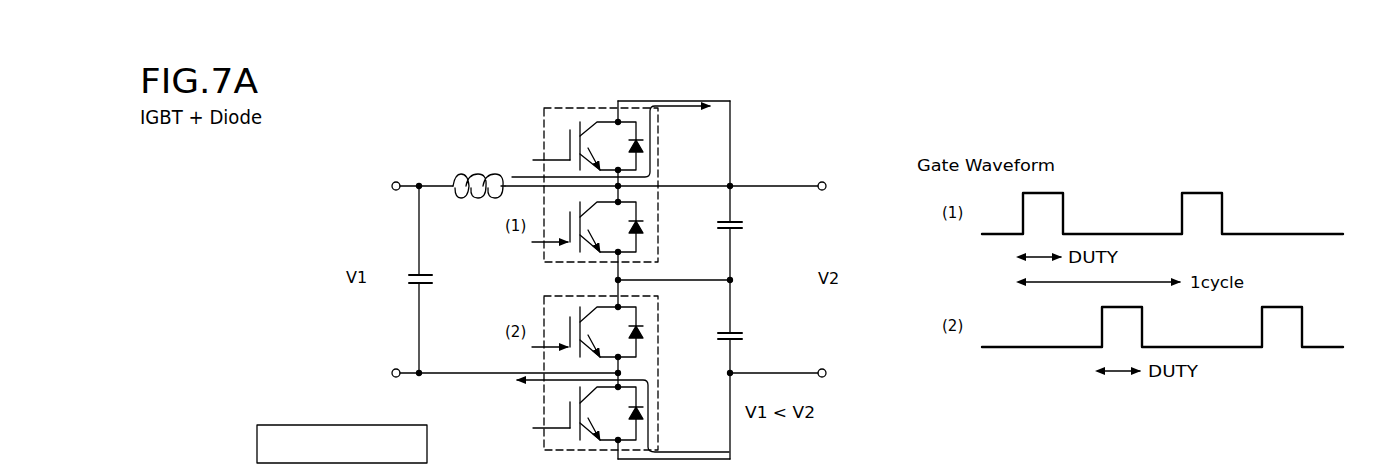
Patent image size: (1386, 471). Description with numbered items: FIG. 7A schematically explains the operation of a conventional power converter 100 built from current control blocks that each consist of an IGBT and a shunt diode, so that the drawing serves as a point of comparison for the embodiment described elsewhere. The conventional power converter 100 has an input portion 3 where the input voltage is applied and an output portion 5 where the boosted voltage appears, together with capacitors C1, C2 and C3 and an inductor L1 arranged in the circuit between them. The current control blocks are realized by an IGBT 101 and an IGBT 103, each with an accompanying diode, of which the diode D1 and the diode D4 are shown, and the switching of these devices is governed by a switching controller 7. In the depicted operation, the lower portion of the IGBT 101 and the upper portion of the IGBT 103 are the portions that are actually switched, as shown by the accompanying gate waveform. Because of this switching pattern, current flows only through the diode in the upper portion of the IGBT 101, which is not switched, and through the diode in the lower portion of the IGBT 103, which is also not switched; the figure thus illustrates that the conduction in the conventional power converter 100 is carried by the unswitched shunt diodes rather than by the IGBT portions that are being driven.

The input portion 3 is at (422, 174).
The output portion 5 is at (779, 174).
The switching controller 7 is at (350, 425).
The conventional power converter 100 is at (738, 107).
The IGBT 101 is at (549, 142).
The IGBT 103 is at (549, 423).
The diode D1 is at (644, 137).
The diode D4 is at (644, 403).
The capacitor C1 is at (745, 224).
The capacitor C2 is at (745, 335).
The capacitor C3 is at (439, 279).
The inductor L1 is at (479, 183).